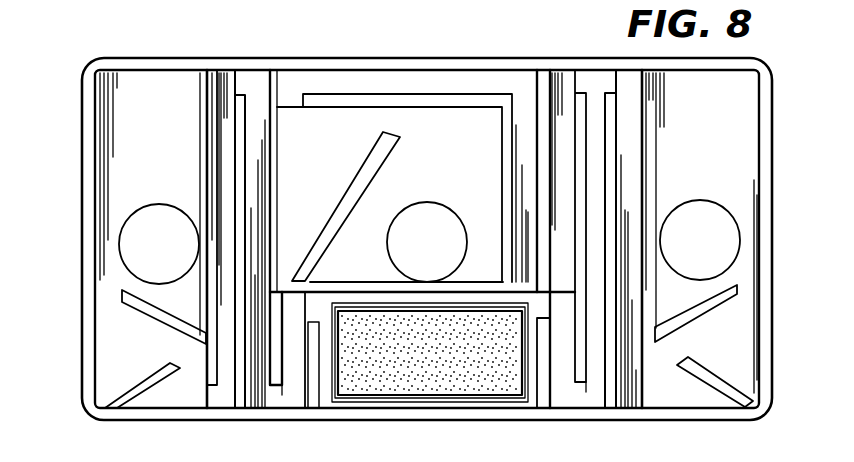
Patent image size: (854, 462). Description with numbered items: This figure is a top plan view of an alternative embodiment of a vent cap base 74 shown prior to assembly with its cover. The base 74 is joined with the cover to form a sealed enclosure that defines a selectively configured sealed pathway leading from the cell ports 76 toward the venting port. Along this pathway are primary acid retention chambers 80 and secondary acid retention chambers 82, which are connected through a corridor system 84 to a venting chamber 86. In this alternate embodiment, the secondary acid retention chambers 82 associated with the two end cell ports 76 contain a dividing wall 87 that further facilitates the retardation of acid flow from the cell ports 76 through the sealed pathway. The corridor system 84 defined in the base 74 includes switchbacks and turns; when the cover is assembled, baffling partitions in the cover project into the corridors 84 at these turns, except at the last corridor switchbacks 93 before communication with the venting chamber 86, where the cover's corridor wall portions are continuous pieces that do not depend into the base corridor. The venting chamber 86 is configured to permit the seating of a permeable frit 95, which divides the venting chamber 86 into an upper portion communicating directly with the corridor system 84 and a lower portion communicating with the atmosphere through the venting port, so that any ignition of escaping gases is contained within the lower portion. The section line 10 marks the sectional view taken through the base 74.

The section line indicator 10 is at (423, 52).
The base 74 is at (231, 50).
The cell ports 76 is at (180, 238).
The primary acid retention chambers 80 is at (153, 115).
The secondary acid retention chambers 82 is at (130, 358).
The corridor system 84 is at (578, 76).
The venting chamber 86 is at (352, 403).
The dividing wall 87 is at (142, 387).
The last corridor switchbacks 93 is at (275, 397).
The frit 95 is at (478, 390).